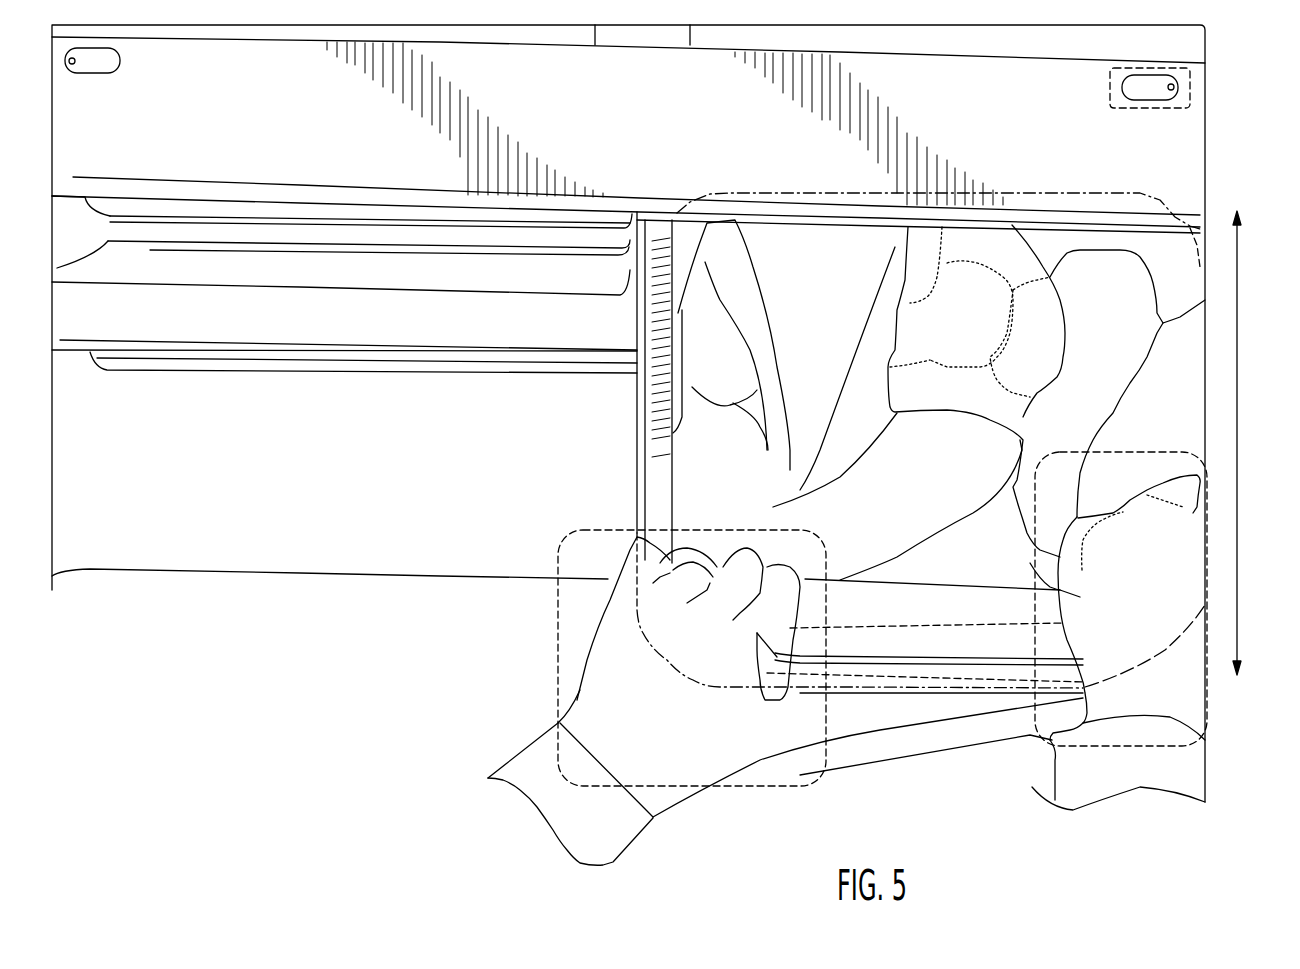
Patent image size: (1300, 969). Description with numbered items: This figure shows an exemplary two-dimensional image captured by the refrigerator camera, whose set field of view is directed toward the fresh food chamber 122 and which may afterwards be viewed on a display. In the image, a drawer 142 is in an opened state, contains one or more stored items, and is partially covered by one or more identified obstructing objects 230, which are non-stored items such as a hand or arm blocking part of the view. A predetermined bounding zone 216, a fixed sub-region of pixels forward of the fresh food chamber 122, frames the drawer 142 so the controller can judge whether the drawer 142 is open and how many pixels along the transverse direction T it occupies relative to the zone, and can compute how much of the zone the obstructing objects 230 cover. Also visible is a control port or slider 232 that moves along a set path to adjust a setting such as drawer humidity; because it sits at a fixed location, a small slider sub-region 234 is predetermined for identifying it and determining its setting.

The fresh food chamber 122 is at (625, 60).
The slider sub-region 234 is at (1110, 86).
The control port or slider 232 is at (1187, 97).
The bounding zone 216 is at (670, 448).
The drawer 142 is at (637, 447).
The obstructing objects 230 is at (1047, 590).
The transverse direction T is at (1240, 468).